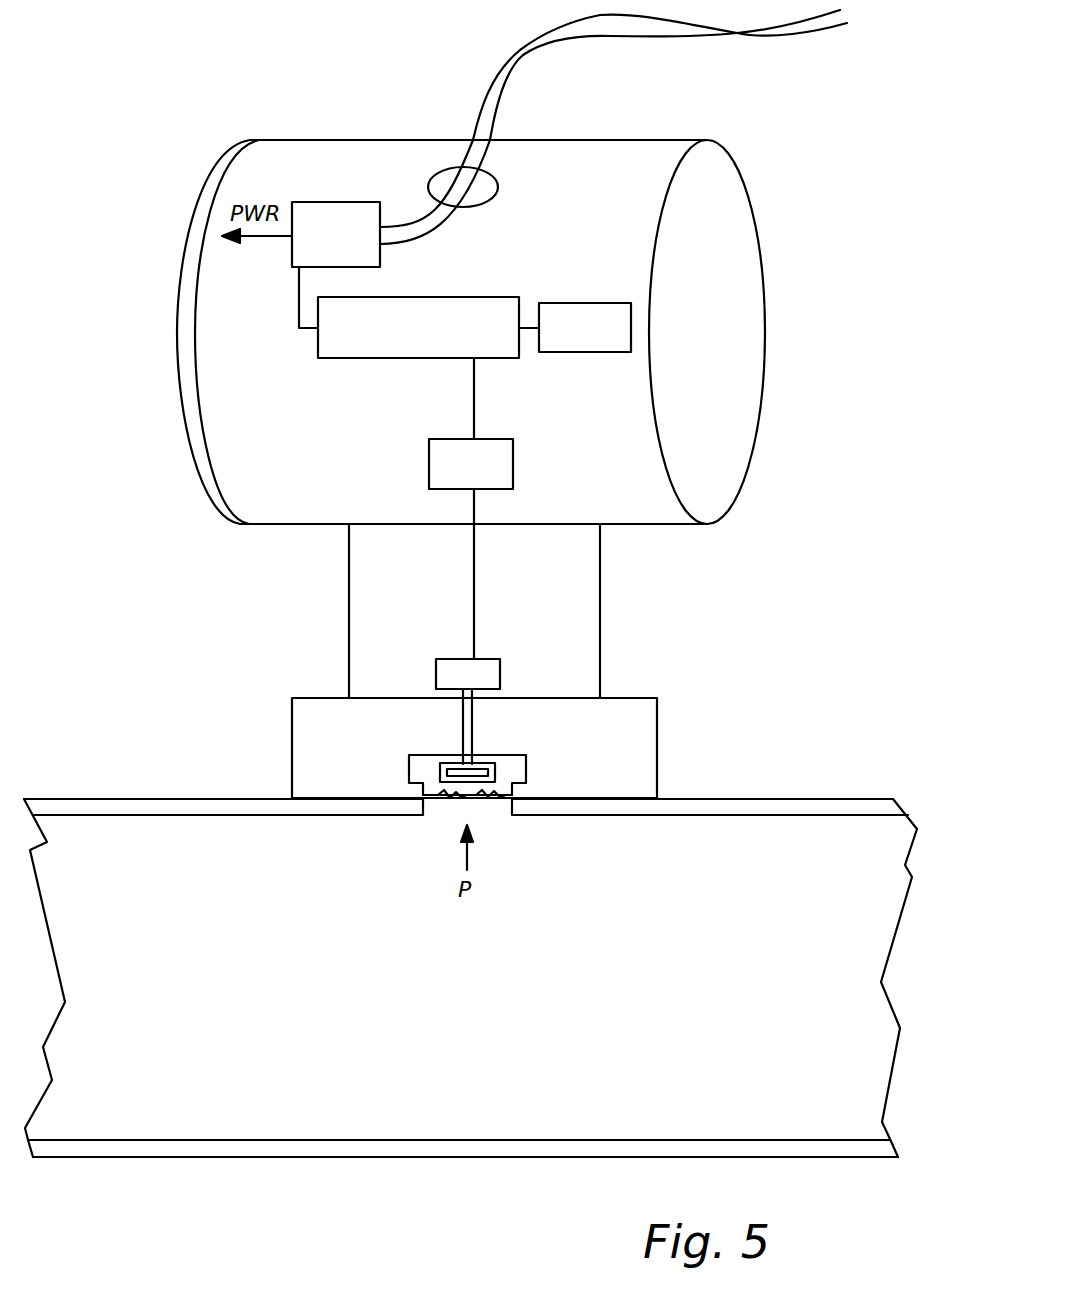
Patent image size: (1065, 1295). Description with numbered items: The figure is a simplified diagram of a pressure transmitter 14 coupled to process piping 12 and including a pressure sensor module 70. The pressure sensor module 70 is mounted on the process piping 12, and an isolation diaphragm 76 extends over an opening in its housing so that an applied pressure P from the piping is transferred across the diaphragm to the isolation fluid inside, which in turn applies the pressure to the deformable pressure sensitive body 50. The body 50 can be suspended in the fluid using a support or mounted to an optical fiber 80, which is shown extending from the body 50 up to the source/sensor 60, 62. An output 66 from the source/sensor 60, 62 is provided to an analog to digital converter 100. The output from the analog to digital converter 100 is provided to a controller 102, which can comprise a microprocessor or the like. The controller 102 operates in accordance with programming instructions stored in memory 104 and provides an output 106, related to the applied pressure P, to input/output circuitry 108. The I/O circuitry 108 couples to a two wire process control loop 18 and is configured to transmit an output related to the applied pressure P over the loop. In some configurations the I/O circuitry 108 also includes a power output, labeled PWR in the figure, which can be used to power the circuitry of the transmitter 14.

The transmitter 14 is at (247, 128).
The two wire process control loop 18 is at (563, 33).
The input/output circuitry 108 is at (338, 202).
The controller 102 is at (418, 297).
The memory 104 is at (594, 303).
The output 106 is at (300, 330).
The analog to digital converter 100 is at (513, 447).
The output 66 is at (474, 512).
The source 60 is at (510, 657).
The sensor 62 is at (493, 659).
The optical fiber 80 is at (473, 723).
The pressure sensor module 70 is at (557, 778).
The body 50 is at (462, 765).
The isolation diaphragm 76 is at (462, 797).
The process piping 12 is at (735, 800).